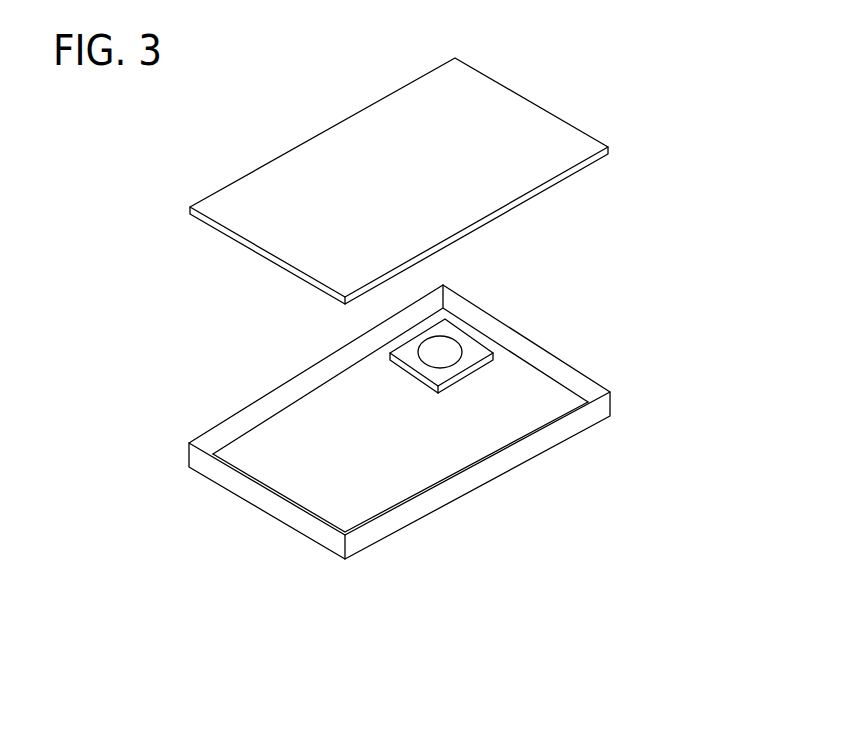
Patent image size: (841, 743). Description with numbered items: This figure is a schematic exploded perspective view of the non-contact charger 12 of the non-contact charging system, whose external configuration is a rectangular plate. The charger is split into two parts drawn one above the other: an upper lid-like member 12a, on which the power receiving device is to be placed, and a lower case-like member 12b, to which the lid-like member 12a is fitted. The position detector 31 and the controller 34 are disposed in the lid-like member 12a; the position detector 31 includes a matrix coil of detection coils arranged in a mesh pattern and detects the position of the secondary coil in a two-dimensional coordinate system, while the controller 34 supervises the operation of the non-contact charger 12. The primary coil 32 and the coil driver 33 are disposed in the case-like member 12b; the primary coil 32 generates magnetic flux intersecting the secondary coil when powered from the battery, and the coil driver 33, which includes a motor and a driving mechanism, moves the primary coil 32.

The non-contact charger 12 is at (453, 294).
The lid-like member 12a is at (412, 166).
The case-like member 12b is at (418, 409).
The position detector 31 is at (399, 166).
The controller 34 is at (468, 121).
The primary coil 32 is at (441, 343).
The coil driver 33 is at (481, 326).